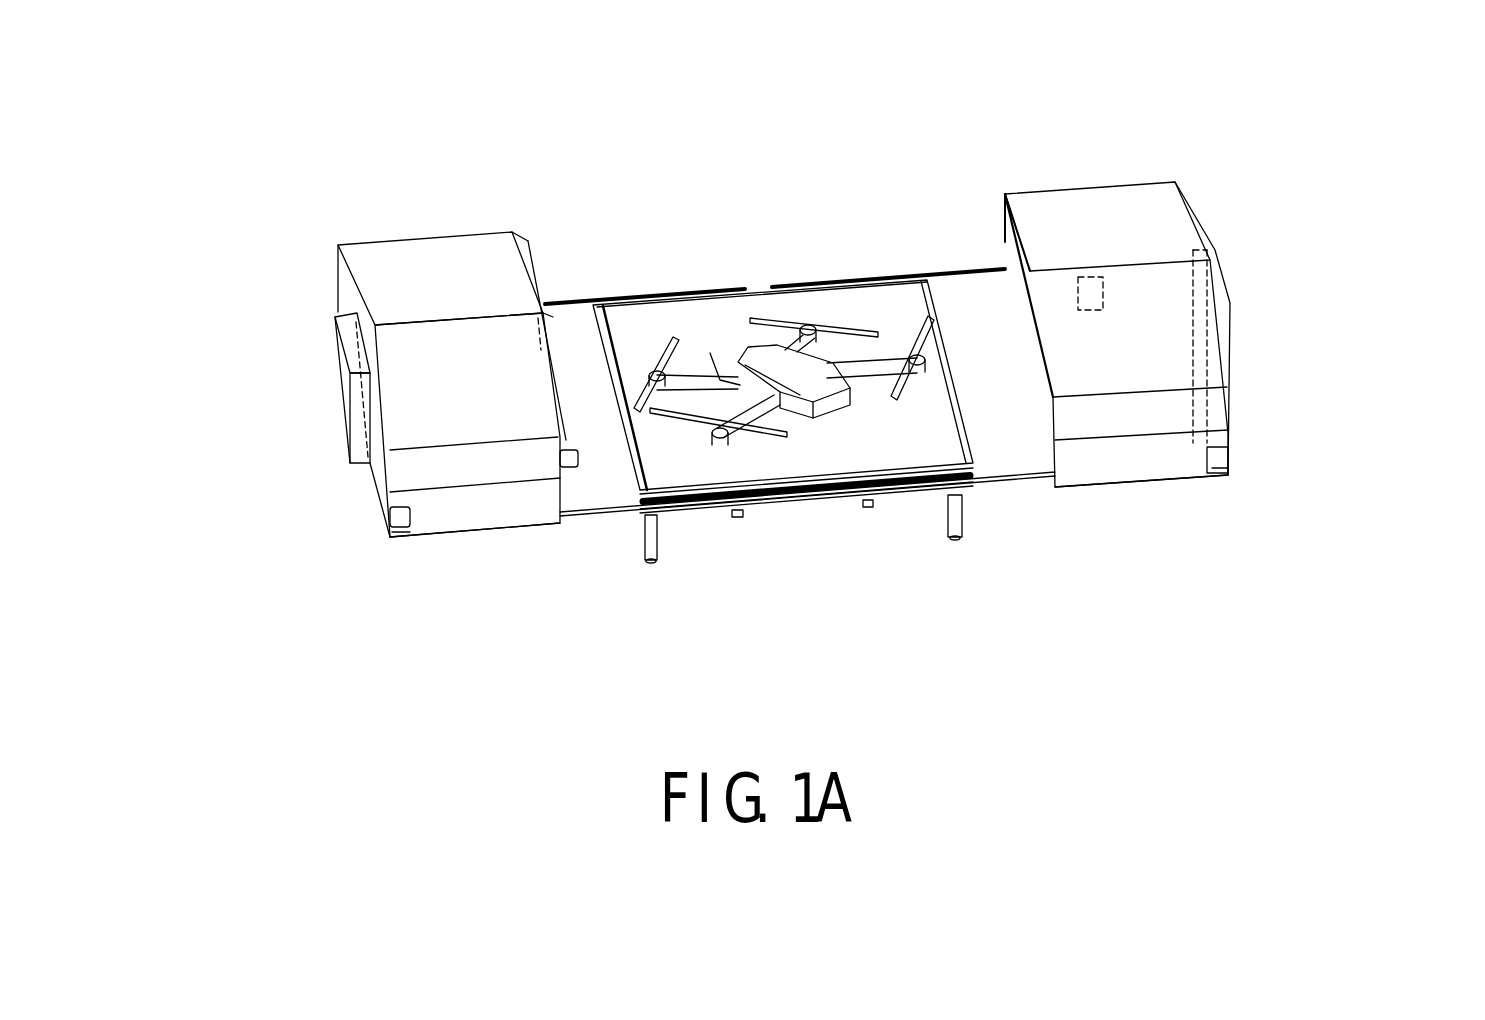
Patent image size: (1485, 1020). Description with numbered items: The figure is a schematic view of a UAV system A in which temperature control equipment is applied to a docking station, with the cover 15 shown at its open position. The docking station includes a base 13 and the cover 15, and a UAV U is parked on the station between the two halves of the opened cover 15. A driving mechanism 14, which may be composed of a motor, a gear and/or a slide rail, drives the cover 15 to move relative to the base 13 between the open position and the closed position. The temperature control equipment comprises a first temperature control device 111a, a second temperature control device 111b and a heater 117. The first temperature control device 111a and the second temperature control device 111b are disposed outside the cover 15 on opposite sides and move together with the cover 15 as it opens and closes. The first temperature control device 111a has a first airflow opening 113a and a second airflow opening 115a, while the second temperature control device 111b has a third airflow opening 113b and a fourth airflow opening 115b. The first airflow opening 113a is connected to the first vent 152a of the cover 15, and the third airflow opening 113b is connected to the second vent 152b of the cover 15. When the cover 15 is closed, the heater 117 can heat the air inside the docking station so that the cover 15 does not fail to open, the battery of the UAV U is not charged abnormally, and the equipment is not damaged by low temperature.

The UAV system A is at (200, 89).
The first temperature control device 111a is at (1197, 231).
The second temperature control device 111b is at (347, 296).
The first airflow opening 113a is at (1210, 368).
The third airflow opening 113b is at (343, 402).
The second airflow opening 115a is at (1030, 266).
The fourth airflow opening 115b is at (538, 312).
The heater 117 is at (1088, 277).
The first vent 152a is at (1215, 365).
The second vent 152b is at (392, 393).
The cover 15 is at (455, 514).
The driving mechanism 14 is at (597, 518).
The base 13 is at (805, 500).
The UAV U is at (760, 350).